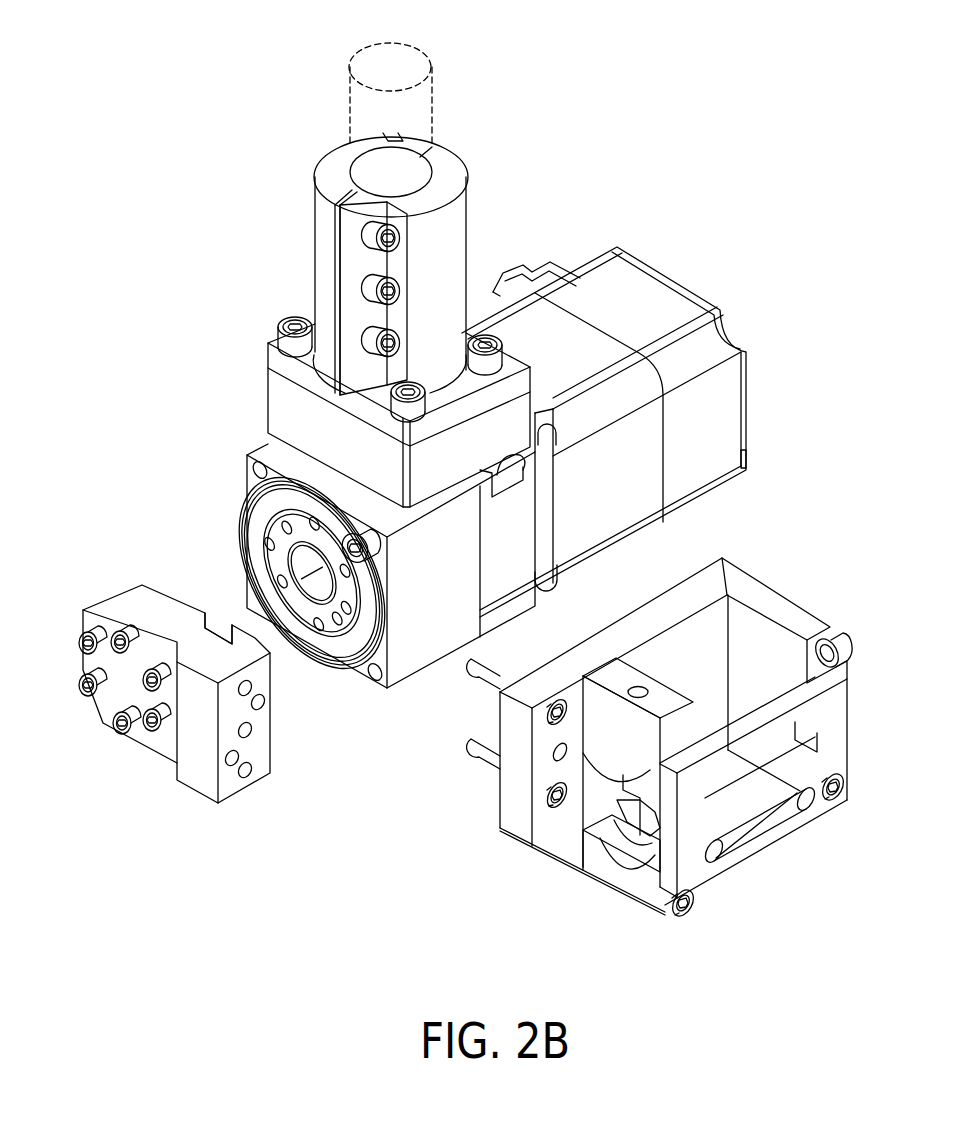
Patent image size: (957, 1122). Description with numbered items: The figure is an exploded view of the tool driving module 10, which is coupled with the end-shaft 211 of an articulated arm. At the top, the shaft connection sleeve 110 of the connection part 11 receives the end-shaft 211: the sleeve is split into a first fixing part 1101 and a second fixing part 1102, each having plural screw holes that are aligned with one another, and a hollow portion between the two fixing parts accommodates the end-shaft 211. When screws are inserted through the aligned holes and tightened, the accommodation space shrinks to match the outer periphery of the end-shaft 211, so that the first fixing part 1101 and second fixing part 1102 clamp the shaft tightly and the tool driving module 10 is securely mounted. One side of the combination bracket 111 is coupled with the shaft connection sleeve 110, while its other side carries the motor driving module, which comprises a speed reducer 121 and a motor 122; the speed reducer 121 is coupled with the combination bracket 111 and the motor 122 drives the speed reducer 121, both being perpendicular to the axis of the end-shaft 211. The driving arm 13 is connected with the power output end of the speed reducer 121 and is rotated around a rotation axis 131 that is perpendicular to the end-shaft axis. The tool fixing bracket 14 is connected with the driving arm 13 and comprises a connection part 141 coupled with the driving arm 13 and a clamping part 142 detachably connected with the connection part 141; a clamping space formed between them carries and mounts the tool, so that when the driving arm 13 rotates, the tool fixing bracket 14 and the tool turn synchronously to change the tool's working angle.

The tool driving module 10 is at (799, 39).
The connection part 11 is at (160, 240).
The shaft connection sleeve 110 is at (217, 225).
The first fixing part 1101 is at (325, 226).
The second fixing part 1102 is at (355, 272).
The combination bracket 111 is at (278, 387).
The speed reducer 121 is at (422, 638).
The motor 122 is at (700, 460).
The driving arm 13 is at (174, 685).
The rotation axis 131 is at (236, 612).
The tool fixing bracket 14 is at (582, 950).
The connection part 141 is at (556, 836).
The clamping part 142 is at (612, 870).
The end-shaft 211 is at (420, 106).